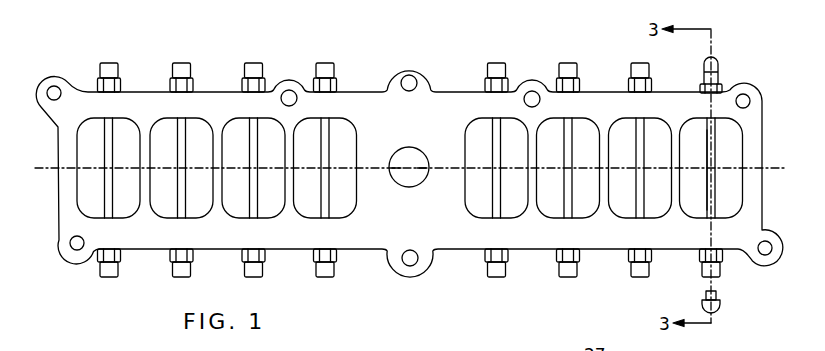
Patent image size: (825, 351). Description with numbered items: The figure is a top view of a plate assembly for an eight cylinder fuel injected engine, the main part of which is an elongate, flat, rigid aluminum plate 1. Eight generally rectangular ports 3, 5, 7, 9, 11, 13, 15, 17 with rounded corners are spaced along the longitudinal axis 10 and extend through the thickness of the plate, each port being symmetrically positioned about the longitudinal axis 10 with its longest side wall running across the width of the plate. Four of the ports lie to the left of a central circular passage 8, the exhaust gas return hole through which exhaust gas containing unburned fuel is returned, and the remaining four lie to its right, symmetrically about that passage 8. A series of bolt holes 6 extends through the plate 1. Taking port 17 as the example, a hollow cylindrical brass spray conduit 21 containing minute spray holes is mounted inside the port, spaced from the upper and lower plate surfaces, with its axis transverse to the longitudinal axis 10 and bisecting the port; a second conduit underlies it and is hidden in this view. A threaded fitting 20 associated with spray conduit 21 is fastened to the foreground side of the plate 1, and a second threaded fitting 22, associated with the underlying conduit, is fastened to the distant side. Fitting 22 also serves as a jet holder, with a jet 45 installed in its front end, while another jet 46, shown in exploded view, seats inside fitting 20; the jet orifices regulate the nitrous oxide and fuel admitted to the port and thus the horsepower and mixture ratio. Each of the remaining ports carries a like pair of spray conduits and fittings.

The plate 1 is at (55, 150).
The port 3 is at (108, 168).
The port 5 is at (181, 168).
The bolt holes 6 is at (72, 249).
The port 7 is at (253, 168).
The central circular passage 8 is at (409, 167).
The port 9 is at (325, 168).
The longitudinal axis 10 is at (767, 170).
The port 11 is at (496, 168).
The port 13 is at (568, 168).
The port 15 is at (640, 168).
The port 17 is at (711, 168).
The threaded fitting 20 is at (722, 263).
The spray conduit 21 is at (712, 158).
The threaded fitting 22 is at (721, 86).
The jet 45 is at (713, 58).
The jet 46 is at (716, 313).